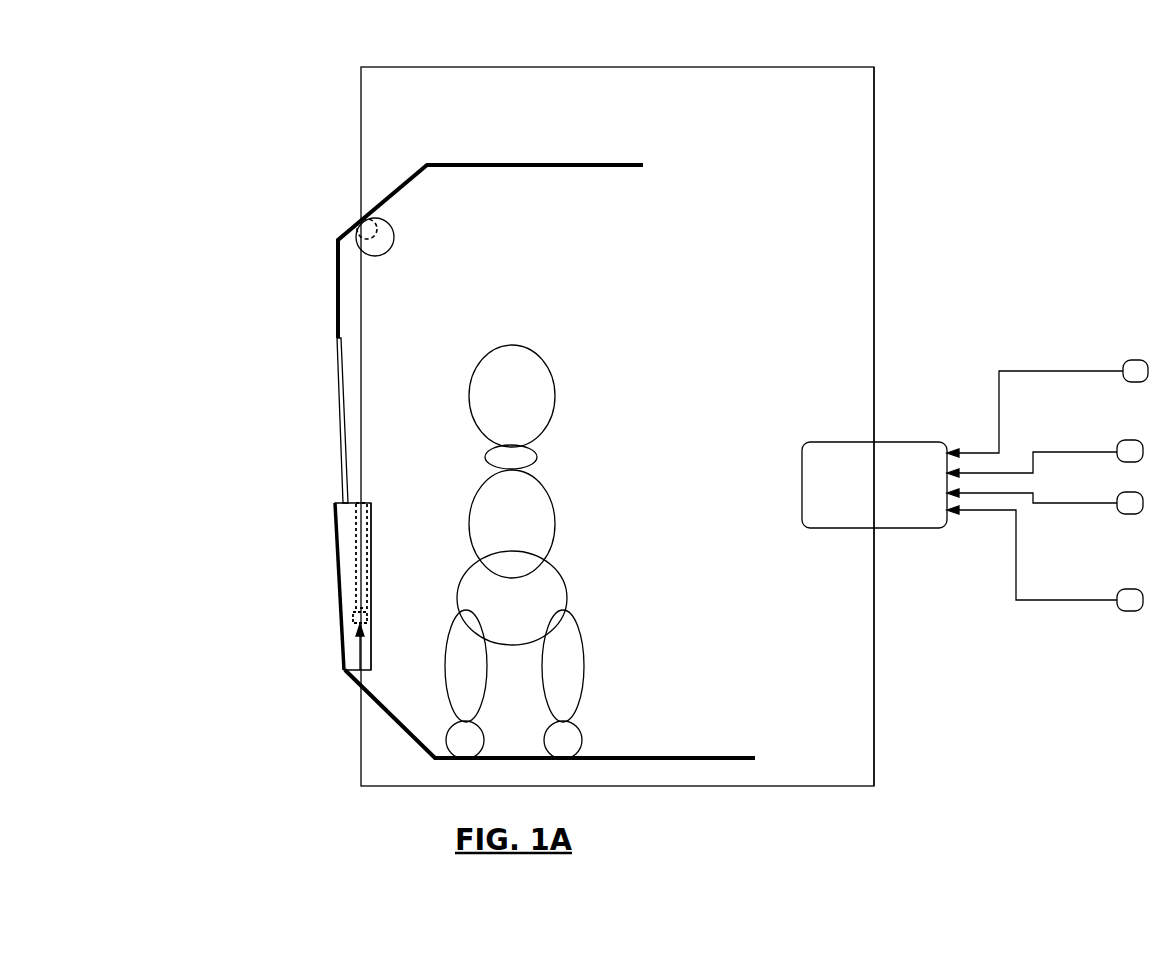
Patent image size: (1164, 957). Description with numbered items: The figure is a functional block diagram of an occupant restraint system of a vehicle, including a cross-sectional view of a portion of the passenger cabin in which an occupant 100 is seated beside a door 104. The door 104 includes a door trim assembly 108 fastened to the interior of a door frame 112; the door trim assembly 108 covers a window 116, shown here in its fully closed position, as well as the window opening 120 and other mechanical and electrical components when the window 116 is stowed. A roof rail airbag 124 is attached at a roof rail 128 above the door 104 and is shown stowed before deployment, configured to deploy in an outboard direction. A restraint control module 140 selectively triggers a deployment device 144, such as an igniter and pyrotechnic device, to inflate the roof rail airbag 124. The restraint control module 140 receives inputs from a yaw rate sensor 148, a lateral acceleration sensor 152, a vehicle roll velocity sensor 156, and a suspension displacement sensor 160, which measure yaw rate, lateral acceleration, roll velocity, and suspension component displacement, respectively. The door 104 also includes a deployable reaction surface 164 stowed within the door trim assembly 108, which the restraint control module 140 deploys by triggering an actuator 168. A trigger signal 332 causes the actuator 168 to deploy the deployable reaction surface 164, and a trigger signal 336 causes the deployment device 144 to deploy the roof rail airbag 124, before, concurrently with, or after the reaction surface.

The occupant 100 is at (555, 518).
The door 104 is at (319, 321).
The door trim assembly 108 is at (371, 550).
The door frame 112 is at (342, 587).
The window 116 is at (338, 395).
The window opening 120 is at (309, 448).
The roof rail airbag 124 is at (384, 215).
The roof rail 128 is at (386, 200).
The restraint control module 140 is at (845, 440).
The deployment device 144 is at (359, 221).
The yaw rate sensor 148 is at (1133, 358).
The lateral acceleration sensor 152 is at (1130, 440).
The vehicle roll velocity sensor 156 is at (1130, 518).
The suspension displacement sensor 160 is at (1130, 613).
The deployable reaction surface 164 is at (368, 587).
The actuator 168 is at (369, 615).
The trigger signal 332 is at (873, 645).
The trigger signal 336 is at (873, 275).